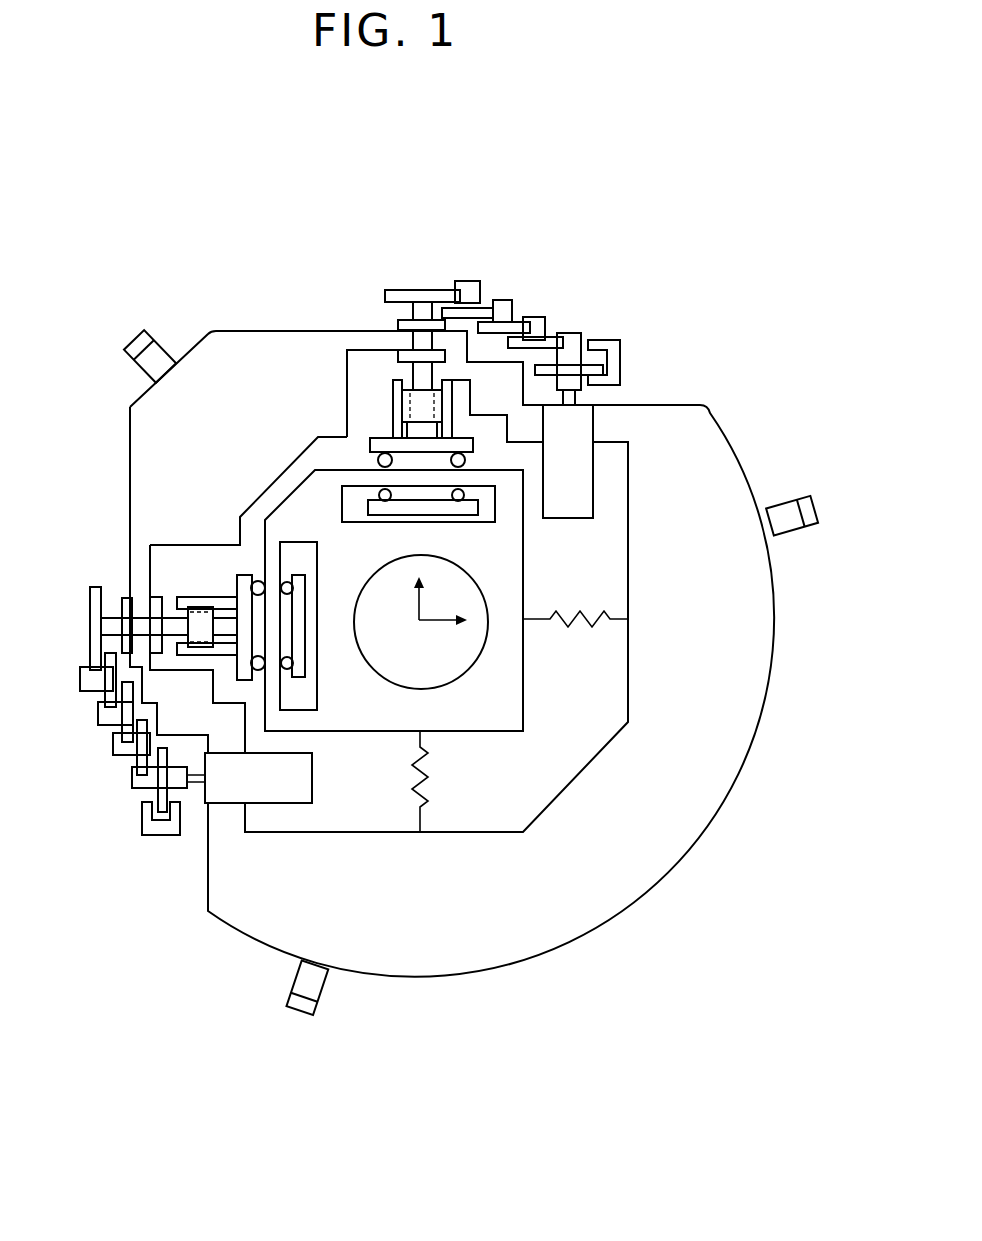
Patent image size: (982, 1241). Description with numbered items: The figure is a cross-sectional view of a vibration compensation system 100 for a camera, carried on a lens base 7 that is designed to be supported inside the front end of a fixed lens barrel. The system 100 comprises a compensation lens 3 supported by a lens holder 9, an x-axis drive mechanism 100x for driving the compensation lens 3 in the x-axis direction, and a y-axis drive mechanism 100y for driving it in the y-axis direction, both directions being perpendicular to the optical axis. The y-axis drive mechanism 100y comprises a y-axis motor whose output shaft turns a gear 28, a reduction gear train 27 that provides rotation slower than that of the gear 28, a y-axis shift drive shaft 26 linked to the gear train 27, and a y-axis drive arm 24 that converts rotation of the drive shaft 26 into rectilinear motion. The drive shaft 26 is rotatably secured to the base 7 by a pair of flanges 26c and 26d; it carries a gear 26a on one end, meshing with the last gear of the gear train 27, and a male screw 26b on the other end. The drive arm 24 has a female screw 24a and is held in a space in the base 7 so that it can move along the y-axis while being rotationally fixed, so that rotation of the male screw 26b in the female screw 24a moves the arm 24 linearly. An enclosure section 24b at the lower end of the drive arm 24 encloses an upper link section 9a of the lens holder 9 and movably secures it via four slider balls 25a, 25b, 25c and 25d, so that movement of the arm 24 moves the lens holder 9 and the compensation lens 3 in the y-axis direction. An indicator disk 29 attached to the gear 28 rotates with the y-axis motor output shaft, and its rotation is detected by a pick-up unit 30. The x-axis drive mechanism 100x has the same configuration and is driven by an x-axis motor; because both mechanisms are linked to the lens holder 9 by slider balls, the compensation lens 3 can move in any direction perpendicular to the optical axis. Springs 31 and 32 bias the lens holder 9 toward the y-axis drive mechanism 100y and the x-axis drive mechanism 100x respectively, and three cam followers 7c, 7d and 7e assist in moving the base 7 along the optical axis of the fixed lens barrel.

The vibration compensation system 100 is at (228, 214).
The x-axis drive mechanism 100x is at (117, 780).
The y-axis drive mechanism 100y is at (470, 219).
The compensation lens 3 is at (400, 677).
The lens base 7 is at (717, 800).
The cam follower 7c is at (297, 997).
The cam follower 7d is at (143, 332).
The cam follower 7e is at (813, 503).
The lens holder 9 is at (490, 720).
The upper link section 9a is at (432, 522).
The y-axis drive arm 24 is at (393, 392).
The female screw 24a is at (417, 410).
The enclosure section 24b is at (345, 505).
The slider ball 25a is at (468, 462).
The slider ball 25b is at (497, 508).
The slider ball 25c is at (393, 522).
The slider ball 25d is at (380, 460).
The y-axis shift drive shaft 26 is at (420, 302).
The gear 26a is at (398, 290).
The male screw 26b is at (420, 406).
The flange 26c is at (372, 264).
The flange 26d is at (353, 315).
The reduction gear train 27 is at (457, 263).
The gear 28 is at (573, 333).
The indicator disk 29 is at (620, 358).
The pick-up unit 30 is at (625, 340).
The spring 31 is at (408, 774).
The spring 32 is at (588, 624).